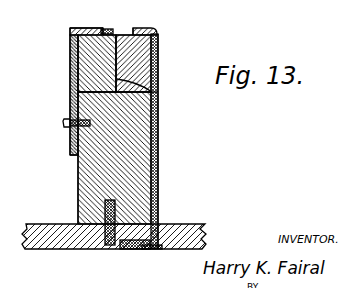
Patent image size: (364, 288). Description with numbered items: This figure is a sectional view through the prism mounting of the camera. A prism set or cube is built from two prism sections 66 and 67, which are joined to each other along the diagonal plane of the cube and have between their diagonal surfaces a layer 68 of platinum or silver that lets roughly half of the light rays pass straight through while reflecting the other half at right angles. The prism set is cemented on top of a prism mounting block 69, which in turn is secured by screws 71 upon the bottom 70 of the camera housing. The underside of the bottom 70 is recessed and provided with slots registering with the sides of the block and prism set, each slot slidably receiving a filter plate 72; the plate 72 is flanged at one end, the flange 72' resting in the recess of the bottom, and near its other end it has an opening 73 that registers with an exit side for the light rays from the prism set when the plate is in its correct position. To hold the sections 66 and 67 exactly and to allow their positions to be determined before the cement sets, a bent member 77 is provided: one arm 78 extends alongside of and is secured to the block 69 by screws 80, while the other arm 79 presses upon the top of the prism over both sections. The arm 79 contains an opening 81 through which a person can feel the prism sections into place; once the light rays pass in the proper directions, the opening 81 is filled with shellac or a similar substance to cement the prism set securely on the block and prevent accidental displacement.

The prism section 66 is at (88, 65).
The prism section 67 is at (138, 57).
The layer 68 is at (155, 91).
The prism mounting block 69 is at (90, 160).
The bottom 70 is at (53, 249).
The screws 71 is at (108, 205).
The filter plate 72 is at (183, 141).
The flange 72' is at (145, 260).
The opening 73 is at (153, 86).
The bent member 77 is at (64, 43).
The arm 78 is at (72, 95).
The arm 79 is at (101, 28).
The screws 80 is at (63, 124).
The opening 81 is at (115, 29).